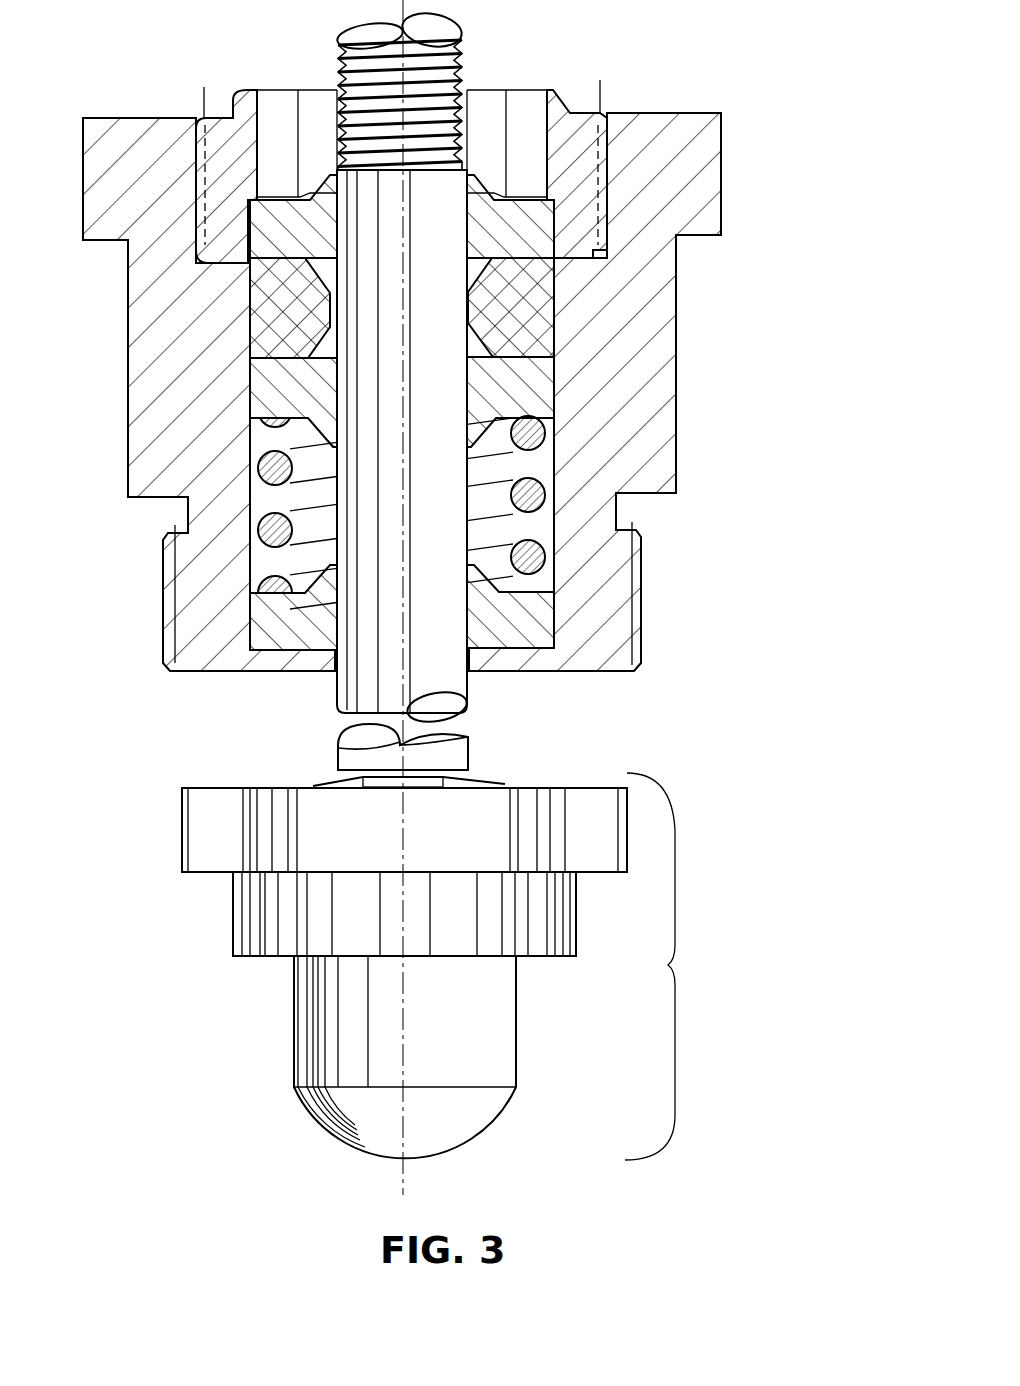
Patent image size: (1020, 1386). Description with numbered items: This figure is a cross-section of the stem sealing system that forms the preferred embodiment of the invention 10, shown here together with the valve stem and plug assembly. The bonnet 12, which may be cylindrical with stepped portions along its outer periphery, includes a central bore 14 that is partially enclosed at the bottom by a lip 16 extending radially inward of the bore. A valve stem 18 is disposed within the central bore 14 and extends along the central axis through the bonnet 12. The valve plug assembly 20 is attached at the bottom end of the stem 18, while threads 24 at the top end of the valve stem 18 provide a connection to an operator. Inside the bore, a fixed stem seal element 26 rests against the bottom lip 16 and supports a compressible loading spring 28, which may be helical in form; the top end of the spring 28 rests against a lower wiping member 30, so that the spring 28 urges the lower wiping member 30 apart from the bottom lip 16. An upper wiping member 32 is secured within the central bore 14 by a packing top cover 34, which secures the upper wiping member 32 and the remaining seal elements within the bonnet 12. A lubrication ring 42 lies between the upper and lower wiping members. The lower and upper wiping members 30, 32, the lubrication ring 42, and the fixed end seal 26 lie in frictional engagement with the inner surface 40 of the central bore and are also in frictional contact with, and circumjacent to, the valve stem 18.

The invention 10 is at (453, 597).
The bonnet 12 is at (720, 122).
The central bore 14 is at (547, 525).
The lip 16 is at (478, 680).
The valve stem 18 is at (470, 753).
The valve plug assembly 20 is at (449, 966).
The threads 24 is at (342, 55).
The fixed stem seal element 26 is at (573, 642).
The compressible loading spring 28 is at (533, 448).
The lower wiping member 30 is at (525, 383).
The upper wiping member 32 is at (603, 240).
The packing top cover 34 is at (557, 92).
The inner surface 40 is at (267, 305).
The lubrication ring 42 is at (272, 503).